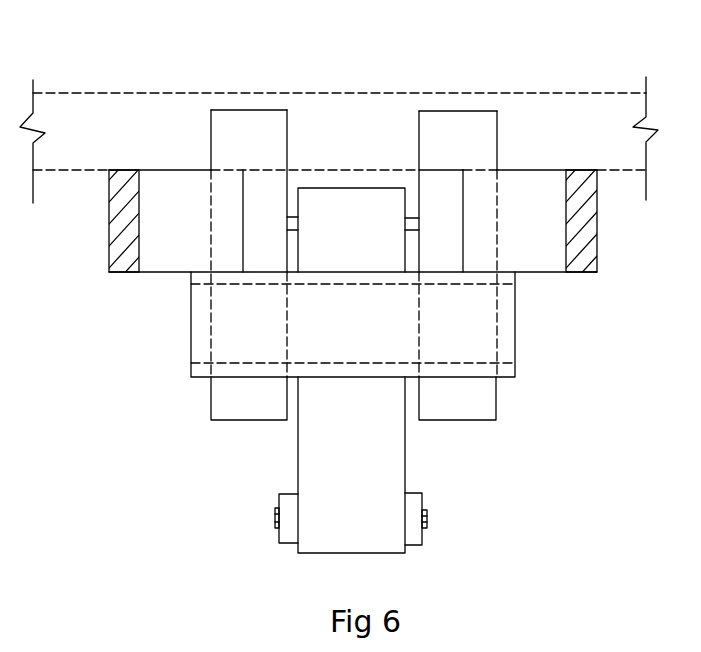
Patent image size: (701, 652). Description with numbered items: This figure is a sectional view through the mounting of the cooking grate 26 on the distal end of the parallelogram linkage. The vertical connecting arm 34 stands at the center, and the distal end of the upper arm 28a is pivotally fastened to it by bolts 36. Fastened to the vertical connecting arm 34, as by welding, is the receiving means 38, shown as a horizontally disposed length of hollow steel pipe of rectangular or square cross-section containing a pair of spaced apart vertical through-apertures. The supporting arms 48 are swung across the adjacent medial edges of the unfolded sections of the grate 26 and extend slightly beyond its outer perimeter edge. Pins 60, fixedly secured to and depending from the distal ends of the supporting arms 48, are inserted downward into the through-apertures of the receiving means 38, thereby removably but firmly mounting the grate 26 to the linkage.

The cooking grate 26 is at (337, 108).
The supporting arms 48 is at (155, 262).
The pins 60 is at (233, 407).
The receiving means 38 is at (200, 353).
The vertical connecting arm 34 is at (390, 446).
The bolts 36 is at (427, 520).
The upper arm 28a is at (410, 537).